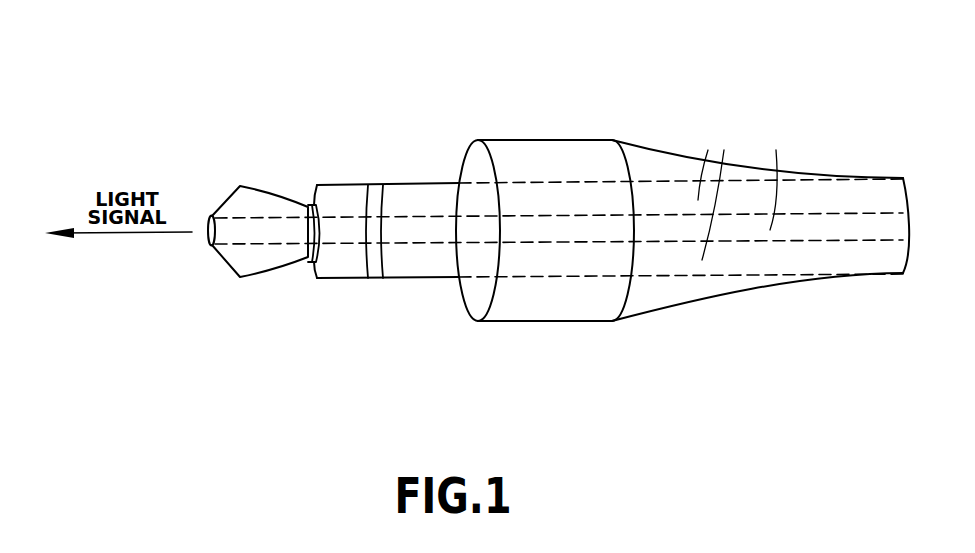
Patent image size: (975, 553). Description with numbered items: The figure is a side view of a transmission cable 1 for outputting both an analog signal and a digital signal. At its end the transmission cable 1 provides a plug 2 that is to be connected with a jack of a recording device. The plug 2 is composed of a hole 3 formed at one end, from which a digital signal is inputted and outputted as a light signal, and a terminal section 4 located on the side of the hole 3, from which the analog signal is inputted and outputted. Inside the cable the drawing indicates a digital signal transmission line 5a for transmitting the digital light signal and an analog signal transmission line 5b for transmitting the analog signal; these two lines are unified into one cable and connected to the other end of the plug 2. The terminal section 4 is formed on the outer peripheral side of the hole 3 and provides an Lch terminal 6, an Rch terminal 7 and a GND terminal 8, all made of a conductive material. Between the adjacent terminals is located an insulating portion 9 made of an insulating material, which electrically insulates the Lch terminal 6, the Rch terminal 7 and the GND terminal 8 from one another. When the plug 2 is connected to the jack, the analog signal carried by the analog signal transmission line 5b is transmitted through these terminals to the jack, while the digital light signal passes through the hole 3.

The transmission cable 1 is at (585, 112).
The plug 2 is at (450, 125).
The hole 3 is at (209, 220).
The terminal section 4 is at (418, 92).
The digital signal transmission line 5a is at (776, 150).
The analog signal transmission line 5b is at (708, 150).
The Lch terminal 6 is at (263, 207).
The Rch terminal 7 is at (321, 192).
The GND terminal 8 is at (405, 202).
The insulating portion 9 is at (378, 205).